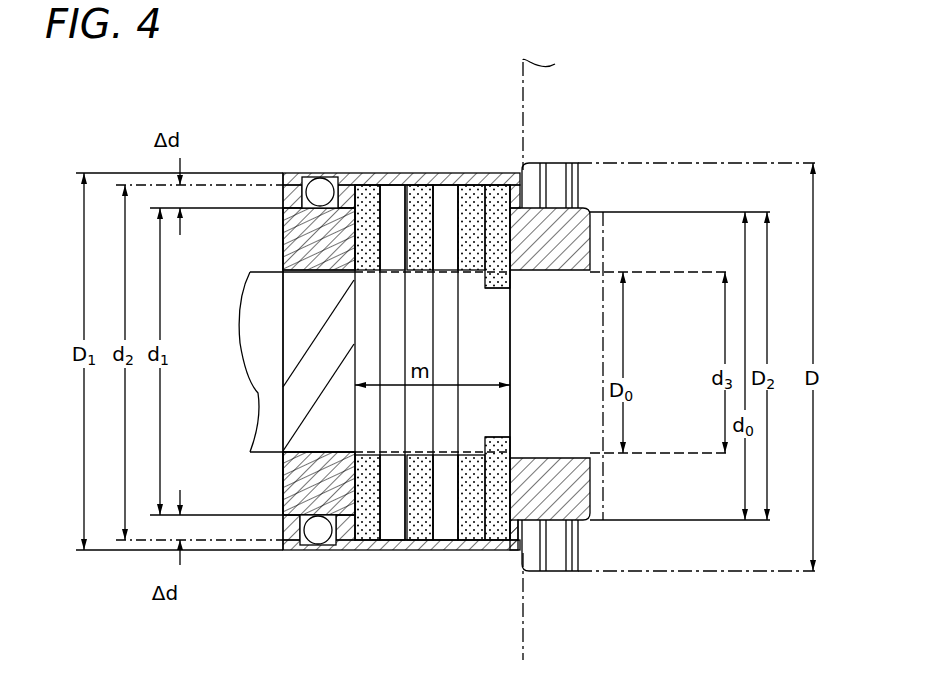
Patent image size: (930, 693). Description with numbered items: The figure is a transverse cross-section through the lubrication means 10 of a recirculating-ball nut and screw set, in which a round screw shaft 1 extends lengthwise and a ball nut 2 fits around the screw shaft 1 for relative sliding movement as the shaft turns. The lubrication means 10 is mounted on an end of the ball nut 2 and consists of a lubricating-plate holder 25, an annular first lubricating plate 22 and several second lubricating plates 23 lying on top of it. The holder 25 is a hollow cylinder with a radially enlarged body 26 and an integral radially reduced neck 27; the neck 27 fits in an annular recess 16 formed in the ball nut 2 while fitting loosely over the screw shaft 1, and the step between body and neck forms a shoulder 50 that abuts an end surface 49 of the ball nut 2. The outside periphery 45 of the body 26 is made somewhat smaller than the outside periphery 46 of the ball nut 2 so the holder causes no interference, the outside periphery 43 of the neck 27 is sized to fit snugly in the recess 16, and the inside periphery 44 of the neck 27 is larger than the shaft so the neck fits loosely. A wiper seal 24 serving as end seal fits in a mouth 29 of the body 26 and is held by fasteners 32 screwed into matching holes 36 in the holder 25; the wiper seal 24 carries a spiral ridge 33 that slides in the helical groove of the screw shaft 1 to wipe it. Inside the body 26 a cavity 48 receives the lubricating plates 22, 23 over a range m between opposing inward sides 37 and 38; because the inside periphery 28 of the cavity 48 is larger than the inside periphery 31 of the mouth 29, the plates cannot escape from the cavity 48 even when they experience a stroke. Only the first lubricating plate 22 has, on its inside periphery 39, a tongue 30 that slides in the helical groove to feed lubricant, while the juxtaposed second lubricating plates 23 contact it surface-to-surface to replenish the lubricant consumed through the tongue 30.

The screw shaft 1 is at (265, 357).
The ball nut 2 is at (560, 175).
The lubrication means 10 is at (484, 162).
The annular recess 16 is at (592, 500).
The first lubricating plate 22 is at (494, 228).
The second lubricating plate 23 is at (440, 225).
The wiper seal 24 is at (310, 232).
The lubricating-plate holder 25 is at (462, 205).
The radially enlarged body 26 is at (388, 228).
The radially reduced neck 27 is at (565, 240).
The inside periphery of the cavity 28 is at (300, 250).
The mouth 29 is at (340, 188).
The tongue 30 is at (512, 290).
The inside periphery of the mouth 31 is at (285, 548).
The fasteners 32 is at (313, 183).
The spiral ridge 33 is at (305, 388).
The matching holes 36 is at (320, 177).
The annular inward side 37 is at (503, 212).
The inward side 38 is at (360, 525).
The inside periphery of the first lubricating plate 39 is at (498, 450).
The outside periphery of the radially reduced neck 43 is at (560, 212).
The inside periphery of the radially reduced neck 44 is at (538, 456).
The outside periphery of the radially enlarged body 45 is at (470, 550).
The outside periphery of the ball nut 46 is at (620, 570).
The cavity 48 is at (447, 215).
The end surface of the ball nut 49 is at (518, 553).
The shoulder 50 is at (543, 190).